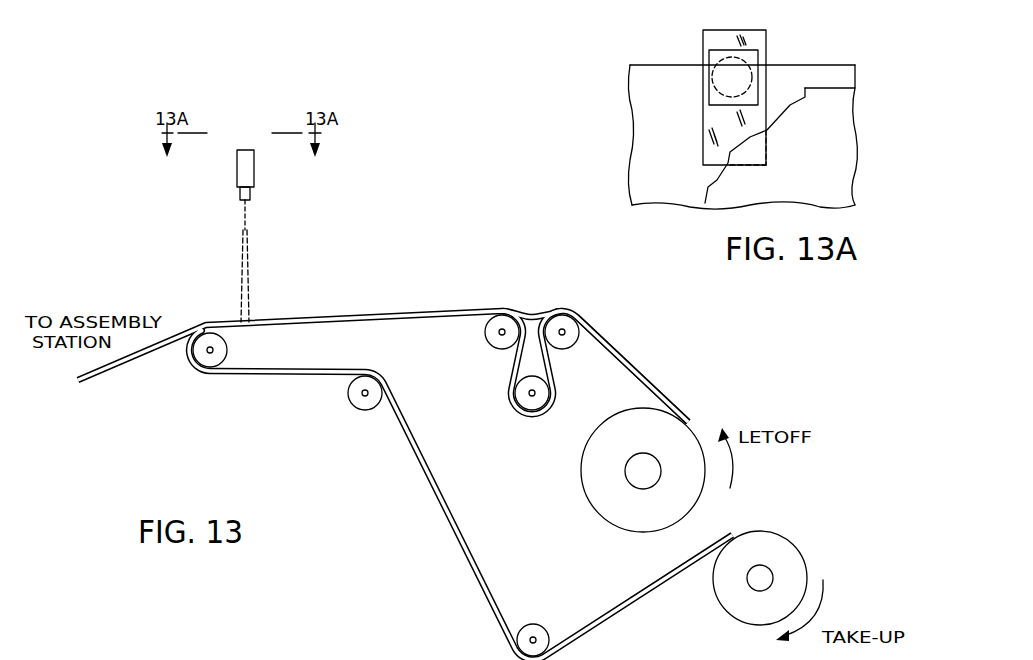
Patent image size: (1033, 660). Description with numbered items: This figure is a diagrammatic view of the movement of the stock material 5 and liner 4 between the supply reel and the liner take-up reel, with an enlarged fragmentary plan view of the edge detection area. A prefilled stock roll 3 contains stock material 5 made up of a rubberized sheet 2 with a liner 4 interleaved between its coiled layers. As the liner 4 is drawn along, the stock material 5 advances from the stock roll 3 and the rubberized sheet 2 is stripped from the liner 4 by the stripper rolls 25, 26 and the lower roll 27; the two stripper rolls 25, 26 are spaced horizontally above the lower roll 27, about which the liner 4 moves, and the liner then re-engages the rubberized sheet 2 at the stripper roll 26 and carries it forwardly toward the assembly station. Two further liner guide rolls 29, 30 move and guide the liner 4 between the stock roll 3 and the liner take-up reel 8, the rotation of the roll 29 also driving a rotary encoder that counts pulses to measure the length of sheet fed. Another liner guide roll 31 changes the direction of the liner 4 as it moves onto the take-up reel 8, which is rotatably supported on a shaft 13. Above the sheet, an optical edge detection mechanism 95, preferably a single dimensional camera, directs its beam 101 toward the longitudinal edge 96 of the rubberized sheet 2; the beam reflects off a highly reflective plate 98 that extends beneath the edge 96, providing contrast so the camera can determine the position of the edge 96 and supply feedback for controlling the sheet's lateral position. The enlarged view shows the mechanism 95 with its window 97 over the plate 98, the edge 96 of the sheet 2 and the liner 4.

In FIG. 13, the rubberized sheet 2 is at (535, 311).
In FIG. 13A, the rubberized sheet 2 is at (823, 155).
In FIG. 13, the prefilled stock roll 3 is at (608, 463).
In FIG. 13, the liner 4 is at (422, 474).
In FIG. 13A, the liner 4 is at (652, 160).
In FIG. 13, the stock material 5 is at (631, 363).
In FIG. 13, the liner take-up reel 8 is at (793, 547).
In FIG. 13, the shaft 13 is at (752, 582).
In FIG. 13, the stripper roll 25 is at (576, 346).
In FIG. 13, the stripper roll 26 is at (485, 336).
In FIG. 13, the lower roll 27 is at (528, 396).
In FIG. 13, the liner guide roll 29 is at (202, 356).
In FIG. 13, the liner guide roll 30 is at (347, 394).
In FIG. 13, the liner guide roll 31 is at (539, 630).
In FIG. 13, the optical edge detection mechanism 95 is at (235, 175).
In FIG. 13A, the optical edge detection mechanism 95 is at (777, 53).
In FIG. 13A, the edge 96 is at (825, 86).
In FIG. 13, the sensor lens / window 97 is at (246, 178).
In FIG. 13A, the sensor lens / window 97 is at (717, 97).
In FIG. 13A, the reflective plate 98 is at (714, 41).
In FIG. 13, the beam 101 is at (248, 250).